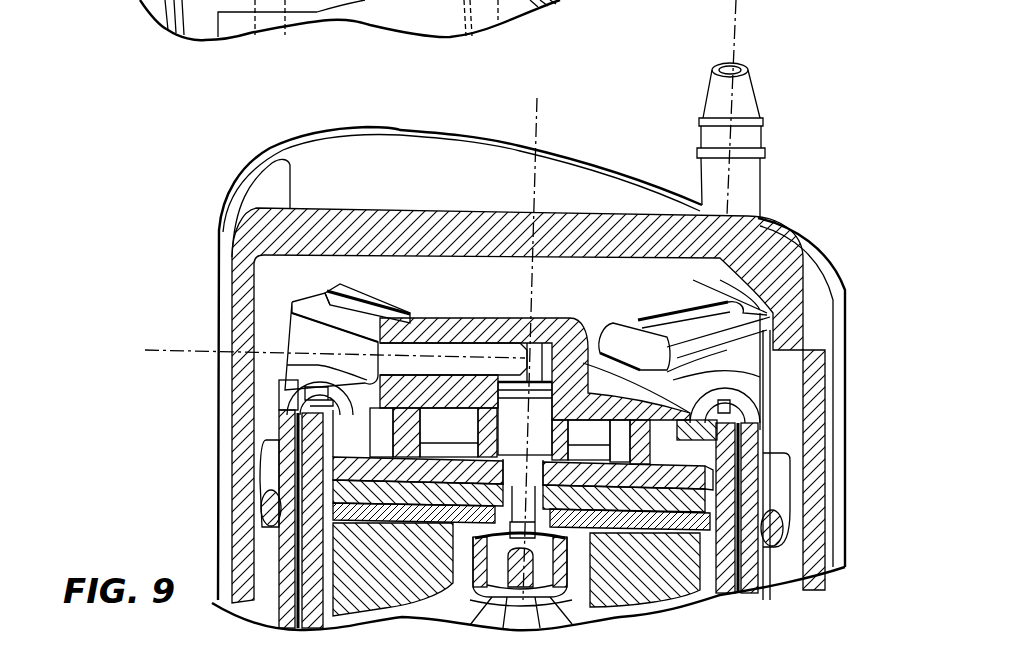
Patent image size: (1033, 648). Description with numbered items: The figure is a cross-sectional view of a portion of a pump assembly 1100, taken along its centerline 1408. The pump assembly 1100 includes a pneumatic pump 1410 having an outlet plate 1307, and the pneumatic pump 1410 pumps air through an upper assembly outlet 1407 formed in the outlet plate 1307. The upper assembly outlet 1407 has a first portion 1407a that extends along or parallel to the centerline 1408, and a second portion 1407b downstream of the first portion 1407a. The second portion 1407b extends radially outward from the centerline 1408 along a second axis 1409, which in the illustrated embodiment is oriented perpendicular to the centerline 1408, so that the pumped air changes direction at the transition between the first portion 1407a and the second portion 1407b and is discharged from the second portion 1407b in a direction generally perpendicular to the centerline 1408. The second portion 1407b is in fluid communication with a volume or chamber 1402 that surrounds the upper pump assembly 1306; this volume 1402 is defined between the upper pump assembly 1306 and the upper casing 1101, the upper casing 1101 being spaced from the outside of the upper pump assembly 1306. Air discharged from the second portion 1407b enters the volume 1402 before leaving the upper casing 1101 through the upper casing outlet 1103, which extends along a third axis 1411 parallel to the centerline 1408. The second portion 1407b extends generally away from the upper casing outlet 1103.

The pump assembly 1100 is at (168, 167).
The upper casing 1101 is at (792, 223).
The upper casing outlet 1103 is at (753, 107).
The upper pump assembly 1306 is at (295, 598).
The outlet plate 1307 is at (765, 312).
The volume or chamber 1402 is at (283, 283).
The upper assembly outlet 1407 is at (765, 436).
The first portion 1407a is at (763, 517).
The second portion 1407b is at (440, 318).
The centerline 1408 is at (533, 128).
The second axis 1409 is at (195, 345).
The pneumatic pump 1410 is at (268, 538).
The third axis 1411 is at (733, 45).